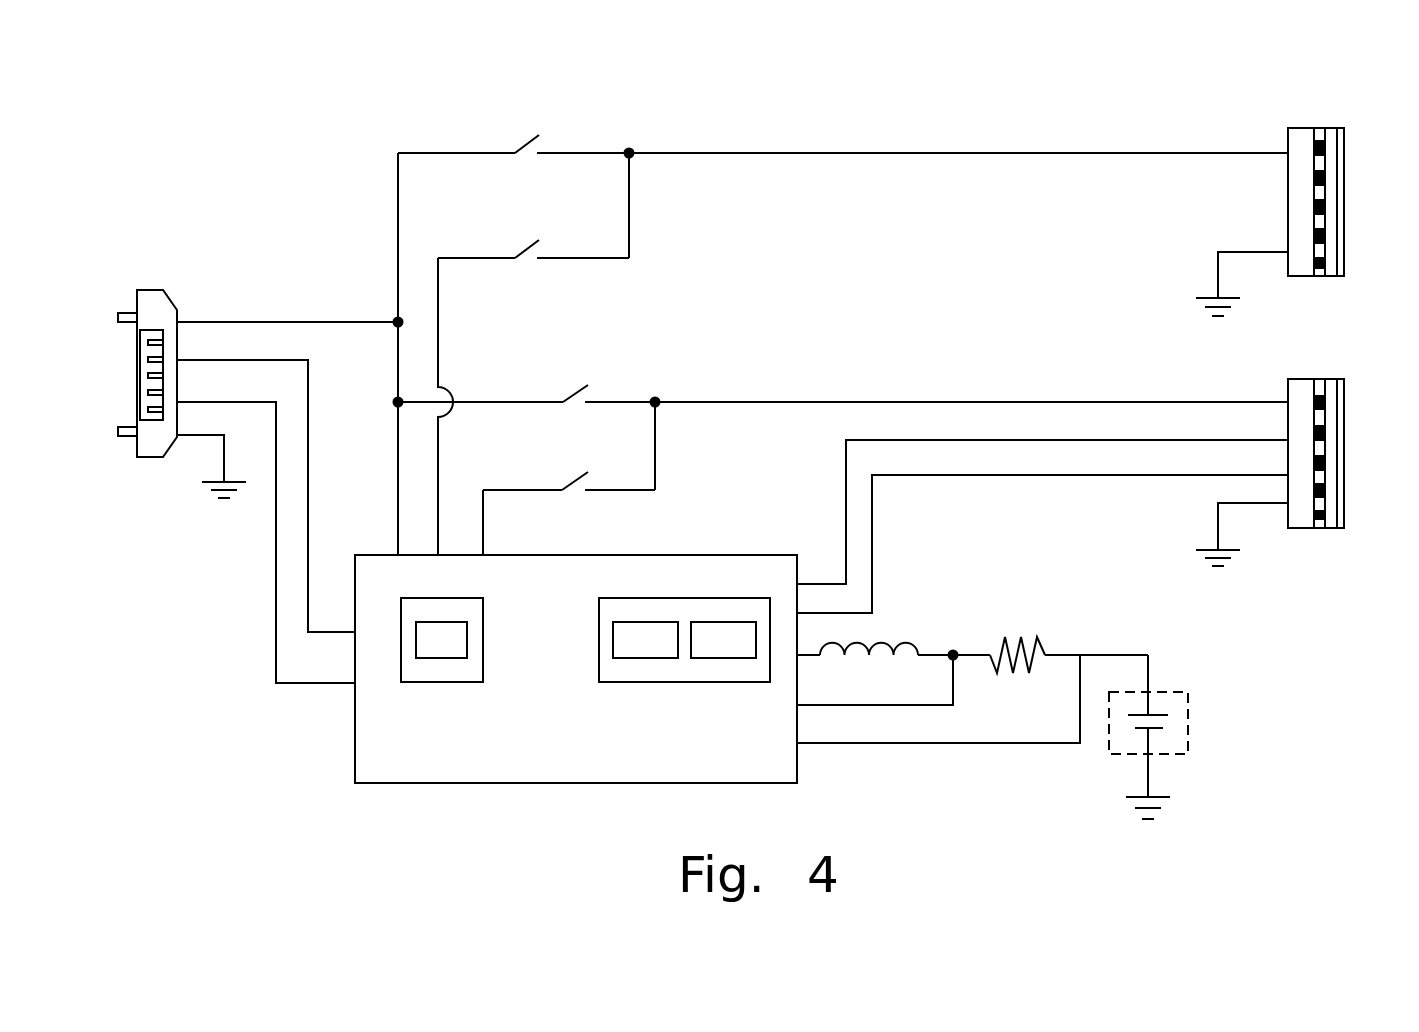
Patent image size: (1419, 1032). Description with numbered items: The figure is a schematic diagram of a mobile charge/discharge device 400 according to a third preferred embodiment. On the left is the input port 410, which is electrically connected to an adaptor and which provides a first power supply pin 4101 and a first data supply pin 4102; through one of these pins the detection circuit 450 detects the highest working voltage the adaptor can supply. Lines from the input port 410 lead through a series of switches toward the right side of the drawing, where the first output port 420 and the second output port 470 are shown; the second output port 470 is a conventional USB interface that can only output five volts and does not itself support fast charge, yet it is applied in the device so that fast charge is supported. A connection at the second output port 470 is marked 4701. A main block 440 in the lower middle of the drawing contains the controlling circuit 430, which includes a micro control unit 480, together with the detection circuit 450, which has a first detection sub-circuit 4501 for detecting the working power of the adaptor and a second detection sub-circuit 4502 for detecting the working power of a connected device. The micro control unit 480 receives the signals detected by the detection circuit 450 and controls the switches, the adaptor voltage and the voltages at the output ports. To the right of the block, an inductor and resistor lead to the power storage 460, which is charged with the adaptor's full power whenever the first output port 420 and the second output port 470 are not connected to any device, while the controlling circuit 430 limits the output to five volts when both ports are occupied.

The mobile charge/discharge device 400 is at (163, 79).
The input port 410 is at (143, 290).
The first power supply pin 4101 is at (177, 322).
The first data supply pin 4102 is at (177, 360).
The first output port 420 is at (1344, 443).
The controlling circuit 430 is at (402, 586).
The control module 440 is at (355, 742).
The detection circuit 450 is at (684, 595).
The first detection sub-circuit 4501 is at (645, 640).
The second detection sub-circuit 4502 is at (723, 640).
The power storage 460 is at (1188, 713).
The second output port 470 is at (1344, 160).
The battery terminal 4701 is at (1288, 150).
The micro control unit 480 is at (441, 640).